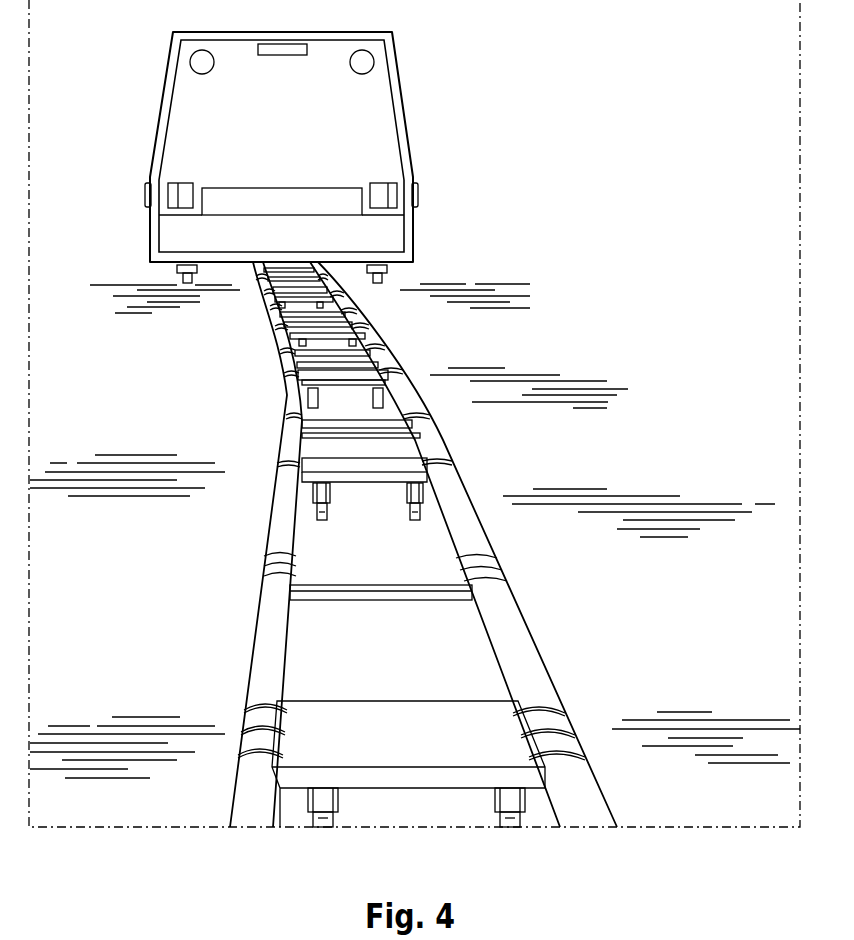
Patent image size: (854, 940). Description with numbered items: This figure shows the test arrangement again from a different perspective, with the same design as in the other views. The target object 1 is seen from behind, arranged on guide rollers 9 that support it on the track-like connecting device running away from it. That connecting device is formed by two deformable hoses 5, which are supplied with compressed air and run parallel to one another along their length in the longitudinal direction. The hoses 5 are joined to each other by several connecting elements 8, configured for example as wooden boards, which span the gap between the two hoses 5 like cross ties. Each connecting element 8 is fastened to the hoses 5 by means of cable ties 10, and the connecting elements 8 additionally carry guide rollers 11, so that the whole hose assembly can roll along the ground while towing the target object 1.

The target object 1 is at (205, 108).
The deformable hose 5 is at (265, 360).
The connecting element 8 is at (323, 557).
The guide rollers 9 is at (176, 276).
The cable ties 10 is at (521, 699).
The guide rollers 11 is at (340, 418).